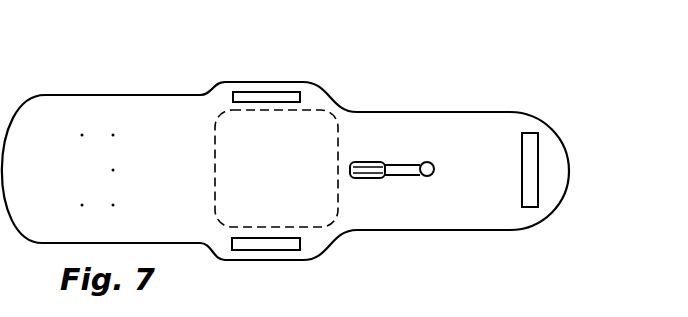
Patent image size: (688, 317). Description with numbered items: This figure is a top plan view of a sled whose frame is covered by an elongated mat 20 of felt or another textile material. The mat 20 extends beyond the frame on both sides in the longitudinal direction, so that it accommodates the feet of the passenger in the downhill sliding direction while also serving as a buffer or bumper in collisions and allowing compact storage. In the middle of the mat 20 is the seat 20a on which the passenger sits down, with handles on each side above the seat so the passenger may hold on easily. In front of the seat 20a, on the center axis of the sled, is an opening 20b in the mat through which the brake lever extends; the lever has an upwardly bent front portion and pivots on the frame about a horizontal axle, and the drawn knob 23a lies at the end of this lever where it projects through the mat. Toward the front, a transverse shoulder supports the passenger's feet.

The mat 20 is at (153, 133).
The seat 20a is at (317, 143).
The opening 20b is at (372, 160).
The knob 23a is at (428, 160).